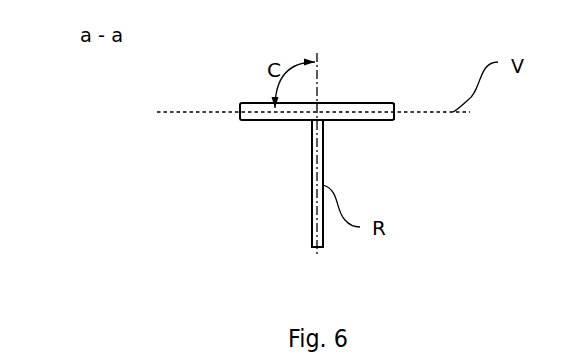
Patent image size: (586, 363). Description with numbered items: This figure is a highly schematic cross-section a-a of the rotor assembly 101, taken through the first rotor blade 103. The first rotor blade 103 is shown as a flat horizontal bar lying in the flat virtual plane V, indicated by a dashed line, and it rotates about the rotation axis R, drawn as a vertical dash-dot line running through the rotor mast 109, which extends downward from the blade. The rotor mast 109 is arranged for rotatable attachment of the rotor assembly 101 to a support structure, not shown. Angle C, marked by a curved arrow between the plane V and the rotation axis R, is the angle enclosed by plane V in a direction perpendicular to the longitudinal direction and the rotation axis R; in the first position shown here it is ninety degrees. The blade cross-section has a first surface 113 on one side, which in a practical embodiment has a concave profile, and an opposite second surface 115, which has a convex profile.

The rotor assembly 101 is at (110, 142).
The first rotor blade 103 is at (362, 110).
The rotor mast 109 is at (312, 217).
The first surface 113 is at (393, 102).
The second surface 115 is at (393, 120).